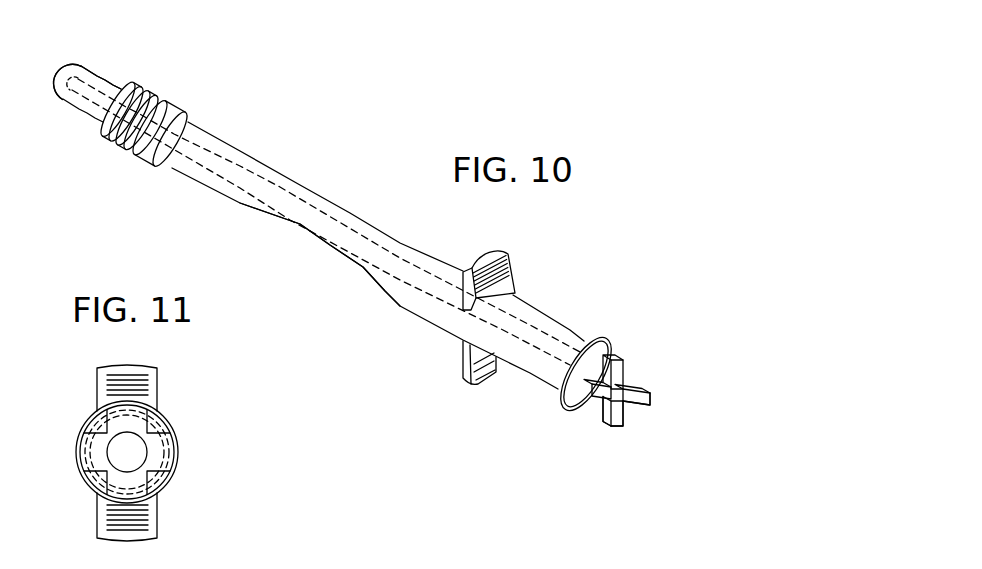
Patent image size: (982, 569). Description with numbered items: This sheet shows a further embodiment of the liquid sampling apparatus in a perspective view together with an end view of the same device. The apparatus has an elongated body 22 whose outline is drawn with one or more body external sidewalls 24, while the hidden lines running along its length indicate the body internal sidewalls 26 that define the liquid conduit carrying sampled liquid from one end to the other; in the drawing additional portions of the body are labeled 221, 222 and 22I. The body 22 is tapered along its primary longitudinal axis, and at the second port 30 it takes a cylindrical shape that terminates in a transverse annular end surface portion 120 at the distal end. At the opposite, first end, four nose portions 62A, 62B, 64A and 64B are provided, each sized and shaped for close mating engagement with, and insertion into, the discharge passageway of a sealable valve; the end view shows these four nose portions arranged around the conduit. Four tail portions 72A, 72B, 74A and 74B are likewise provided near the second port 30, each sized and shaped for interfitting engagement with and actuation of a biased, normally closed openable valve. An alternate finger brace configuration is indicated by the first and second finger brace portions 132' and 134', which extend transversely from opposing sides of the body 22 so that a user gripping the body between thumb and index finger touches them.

In FIG. 10, the body 22 is at (328, 234).
In FIG. 10, the first shaft portion 221 is at (320, 254).
In FIG. 10, the second shaft portion 222 is at (80, 108).
In FIG. 10, the shaft collar/ring portion 22I is at (173, 98).
In FIG. 10, the body external sidewall 24 is at (285, 174).
In FIG. 11, the body external sidewall 24 is at (180, 455).
In FIG. 10, the body internal sidewall 26 is at (337, 215).
In FIG. 11, the body internal sidewall 26 is at (118, 450).
In FIG. 10, the second port 30 is at (80, 63).
In FIG. 10, the transverse annular end surface portion 120 is at (58, 78).
In FIG. 10, the first finger brace portion 132' is at (518, 264).
In FIG. 11, the first finger brace portion 132' is at (160, 377).
In FIG. 10, the second finger brace portion 134' is at (448, 362).
In FIG. 11, the second finger brace portion 134' is at (167, 526).
In FIG. 10, the nose portion 62A is at (597, 423).
In FIG. 10, the nose portion 62B is at (632, 420).
In FIG. 10, the nose portion 64A is at (566, 397).
In FIG. 10, the nose portion 64B is at (622, 360).
In FIG. 10, the tail portion 72A is at (615, 430).
In FIG. 11, the tail portion 72A is at (95, 477).
In FIG. 10, the tail portion 72B is at (648, 402).
In FIG. 11, the tail portion 72B is at (163, 480).
In FIG. 10, the tail portion 74A is at (590, 398).
In FIG. 11, the tail portion 74A is at (95, 423).
In FIG. 10, the tail portion 74B is at (646, 375).
In FIG. 11, the tail portion 74B is at (158, 421).